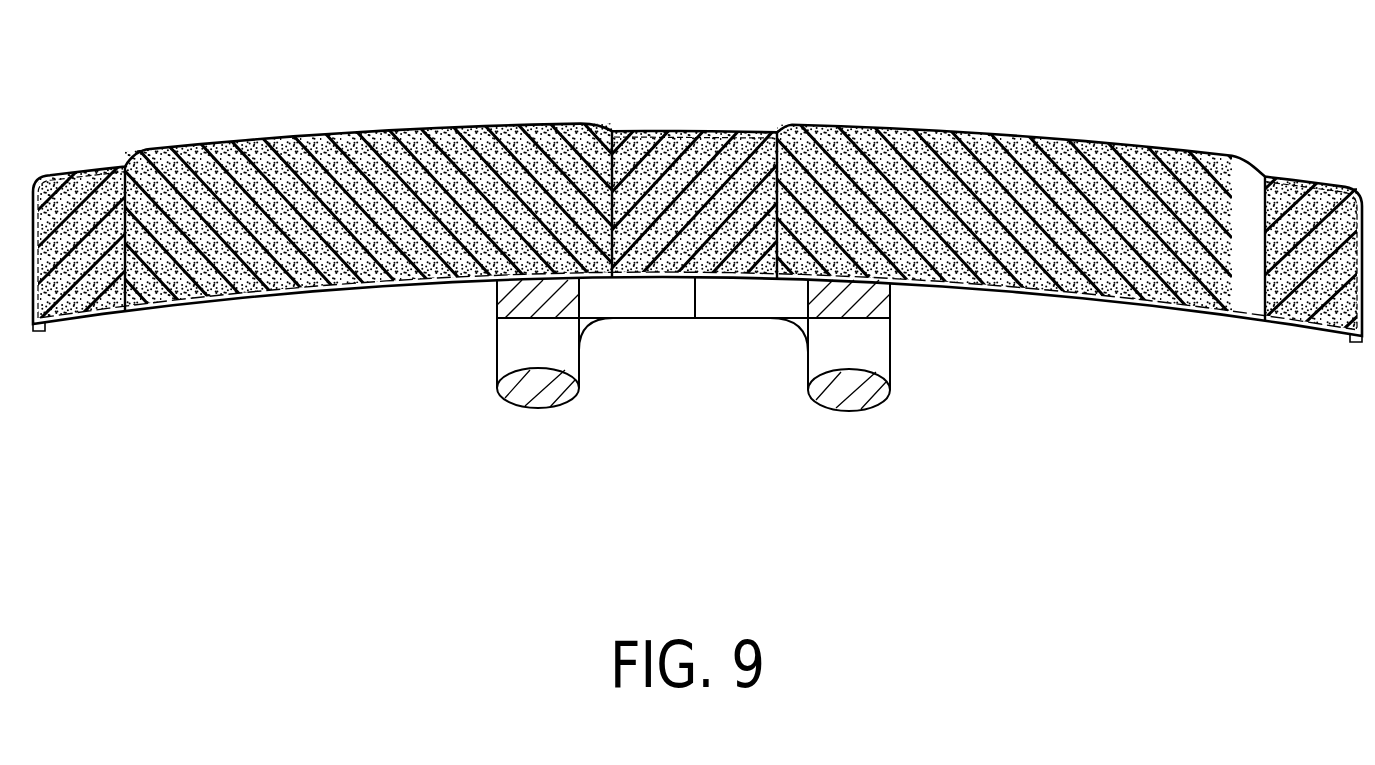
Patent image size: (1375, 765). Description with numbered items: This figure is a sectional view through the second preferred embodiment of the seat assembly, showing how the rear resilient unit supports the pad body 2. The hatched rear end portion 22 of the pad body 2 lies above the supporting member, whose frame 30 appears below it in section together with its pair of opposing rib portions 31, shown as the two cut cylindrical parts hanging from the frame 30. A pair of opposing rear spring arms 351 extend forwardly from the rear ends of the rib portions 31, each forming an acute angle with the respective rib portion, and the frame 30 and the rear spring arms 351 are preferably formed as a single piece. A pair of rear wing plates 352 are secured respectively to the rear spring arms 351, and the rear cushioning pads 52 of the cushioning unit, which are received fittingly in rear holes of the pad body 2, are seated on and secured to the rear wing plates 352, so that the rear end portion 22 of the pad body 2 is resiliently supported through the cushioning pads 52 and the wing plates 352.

The pad body 2 is at (667, 115).
The rear end portion 22 is at (737, 165).
The rear cushioning pads 52 is at (360, 150).
The frame 30 is at (720, 333).
The rib portions 31 is at (538, 392).
The rear spring arms 351 is at (517, 305).
The rear wing plates 352 is at (340, 292).